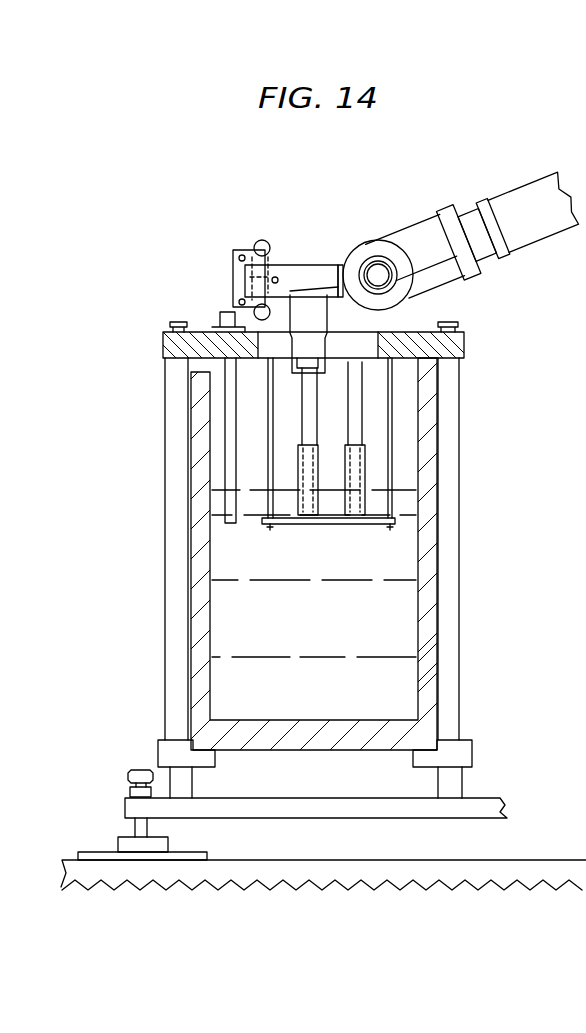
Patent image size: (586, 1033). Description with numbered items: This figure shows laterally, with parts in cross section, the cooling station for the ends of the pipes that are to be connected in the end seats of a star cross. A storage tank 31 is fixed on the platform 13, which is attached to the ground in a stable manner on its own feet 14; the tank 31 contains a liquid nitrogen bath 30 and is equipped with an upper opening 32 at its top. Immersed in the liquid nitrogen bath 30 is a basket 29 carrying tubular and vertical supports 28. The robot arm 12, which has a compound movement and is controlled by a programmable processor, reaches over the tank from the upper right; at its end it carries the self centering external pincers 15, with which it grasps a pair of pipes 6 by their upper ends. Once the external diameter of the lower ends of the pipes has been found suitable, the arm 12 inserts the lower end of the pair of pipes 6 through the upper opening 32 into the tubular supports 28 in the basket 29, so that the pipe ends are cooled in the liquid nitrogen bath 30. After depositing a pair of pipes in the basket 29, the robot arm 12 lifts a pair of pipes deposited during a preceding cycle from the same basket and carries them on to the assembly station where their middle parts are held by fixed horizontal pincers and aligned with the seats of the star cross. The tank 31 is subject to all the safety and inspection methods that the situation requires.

The robot arm 12 is at (482, 202).
The self centering external pincer 15 is at (312, 317).
The upper opening 32 is at (360, 342).
The pipe 6 is at (308, 393).
The basket 29 is at (392, 455).
The tubular vertical support 28 is at (315, 527).
The storage tank 31 is at (200, 600).
The liquid nitrogen bath 30 is at (395, 608).
The platform 13 is at (483, 802).
The foot 14 is at (122, 843).